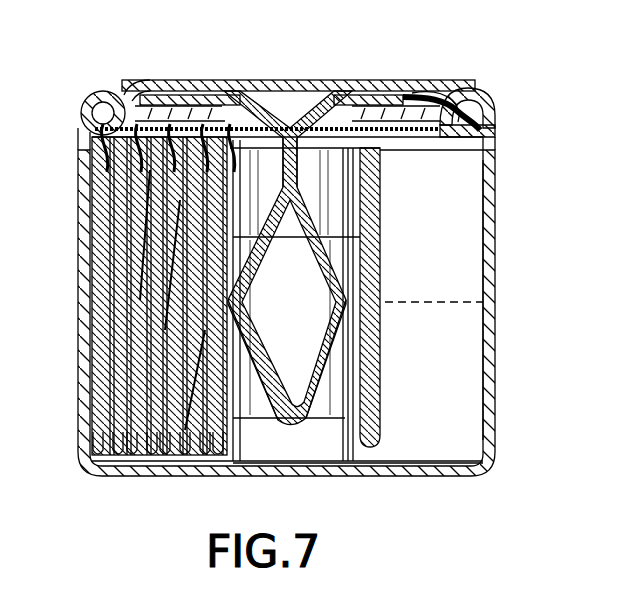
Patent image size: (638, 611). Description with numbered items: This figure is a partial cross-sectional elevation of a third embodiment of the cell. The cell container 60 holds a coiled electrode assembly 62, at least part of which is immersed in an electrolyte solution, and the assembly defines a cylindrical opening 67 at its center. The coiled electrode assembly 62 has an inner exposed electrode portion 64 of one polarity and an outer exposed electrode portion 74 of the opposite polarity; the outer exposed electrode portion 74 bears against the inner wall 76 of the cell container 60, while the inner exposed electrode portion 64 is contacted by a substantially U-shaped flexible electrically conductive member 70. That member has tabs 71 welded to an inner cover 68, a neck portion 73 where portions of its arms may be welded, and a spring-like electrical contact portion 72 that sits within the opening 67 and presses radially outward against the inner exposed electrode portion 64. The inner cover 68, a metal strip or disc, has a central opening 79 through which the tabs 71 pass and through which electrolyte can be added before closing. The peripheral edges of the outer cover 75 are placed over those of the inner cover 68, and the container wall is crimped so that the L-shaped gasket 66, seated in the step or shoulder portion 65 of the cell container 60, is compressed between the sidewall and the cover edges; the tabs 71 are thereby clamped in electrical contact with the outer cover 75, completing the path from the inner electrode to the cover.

The cell container 60 is at (496, 346).
The coiled electrode assembly 62 is at (235, 465).
The inner exposed electrode portion 64 is at (374, 411).
The step or shoulder portion 65 is at (488, 137).
The L-shaped gasket 66 is at (455, 96).
The cylindrical opening 67 is at (289, 438).
The inner cover 68 is at (160, 90).
The flexible electrically conductive member 70 is at (320, 226).
The tabs 71 is at (230, 82).
The spring-like electrical contact portion 72 is at (343, 300).
The neck portion 73 is at (299, 172).
The outer exposed electrode portion 74 is at (98, 350).
The outer cover 75 is at (403, 92).
The inner wall 76 is at (490, 253).
The opening 79 is at (288, 106).